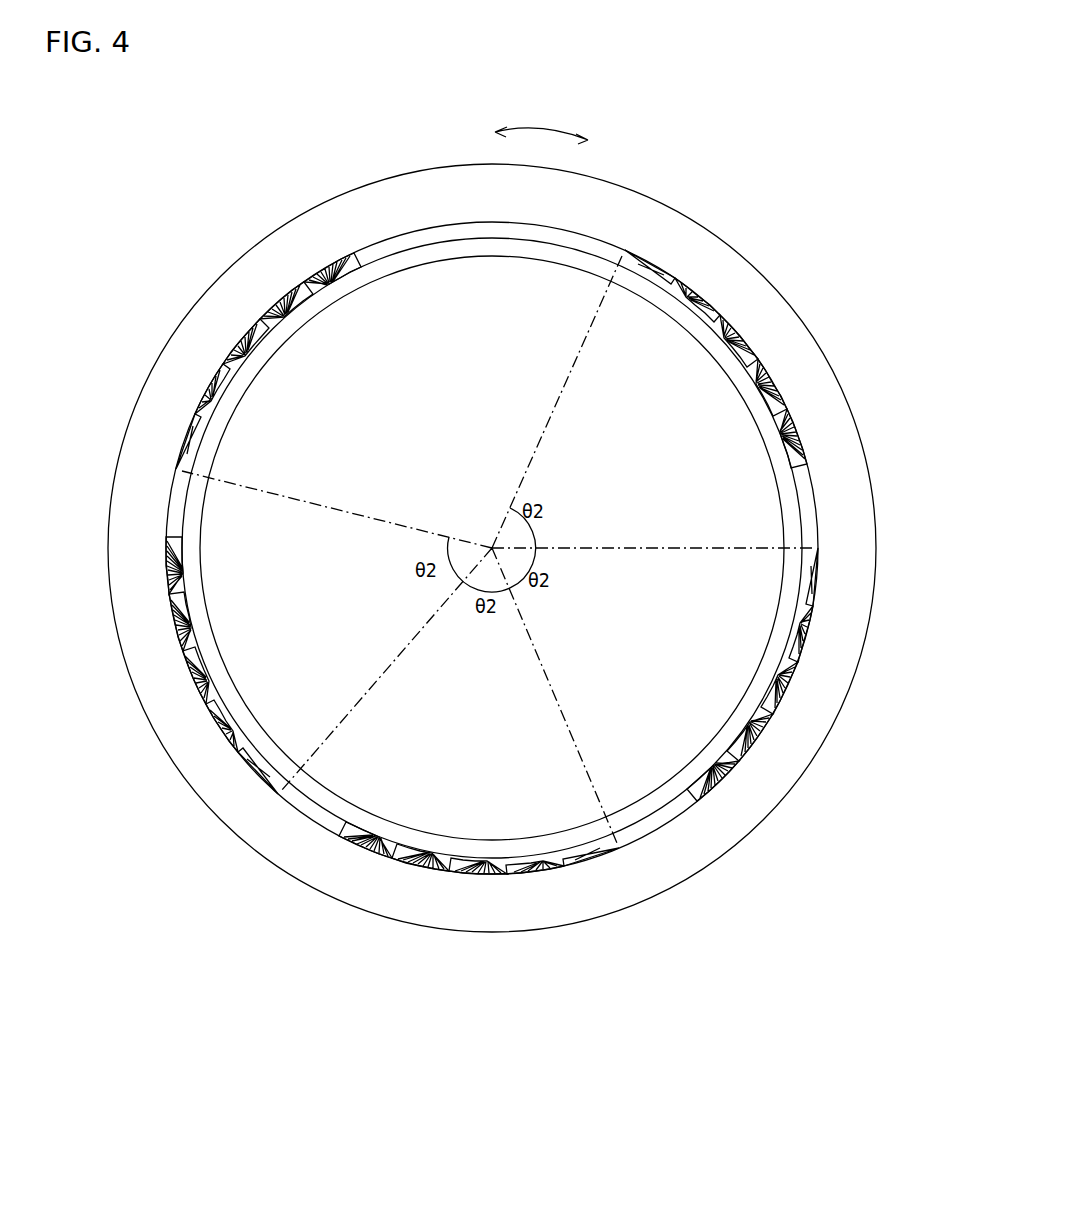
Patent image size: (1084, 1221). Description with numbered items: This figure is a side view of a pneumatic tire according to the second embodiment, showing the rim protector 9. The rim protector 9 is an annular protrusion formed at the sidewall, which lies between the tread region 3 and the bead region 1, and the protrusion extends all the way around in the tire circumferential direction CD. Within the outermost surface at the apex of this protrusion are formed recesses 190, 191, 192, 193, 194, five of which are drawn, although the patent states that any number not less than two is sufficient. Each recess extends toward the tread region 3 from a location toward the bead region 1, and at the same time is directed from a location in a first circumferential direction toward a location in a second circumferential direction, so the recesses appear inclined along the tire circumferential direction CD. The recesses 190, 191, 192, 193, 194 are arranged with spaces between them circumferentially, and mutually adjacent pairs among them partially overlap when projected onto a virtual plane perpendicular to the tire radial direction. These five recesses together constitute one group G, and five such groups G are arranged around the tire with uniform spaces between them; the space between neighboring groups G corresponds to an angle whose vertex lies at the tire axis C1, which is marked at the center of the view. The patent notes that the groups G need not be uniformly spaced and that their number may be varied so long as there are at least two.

The bead region 1 is at (240, 611).
The tread region 3 is at (281, 914).
The rim protector 9 is at (470, 229).
The recess 190 is at (182, 443).
The recess 191 is at (200, 395).
The recess 192 is at (218, 368).
The recess 193 is at (252, 332).
The recess 194 is at (290, 292).
The group G is at (191, 204).
The tire axis C1 is at (492, 548).
The tire circumferential direction CD is at (541, 122).